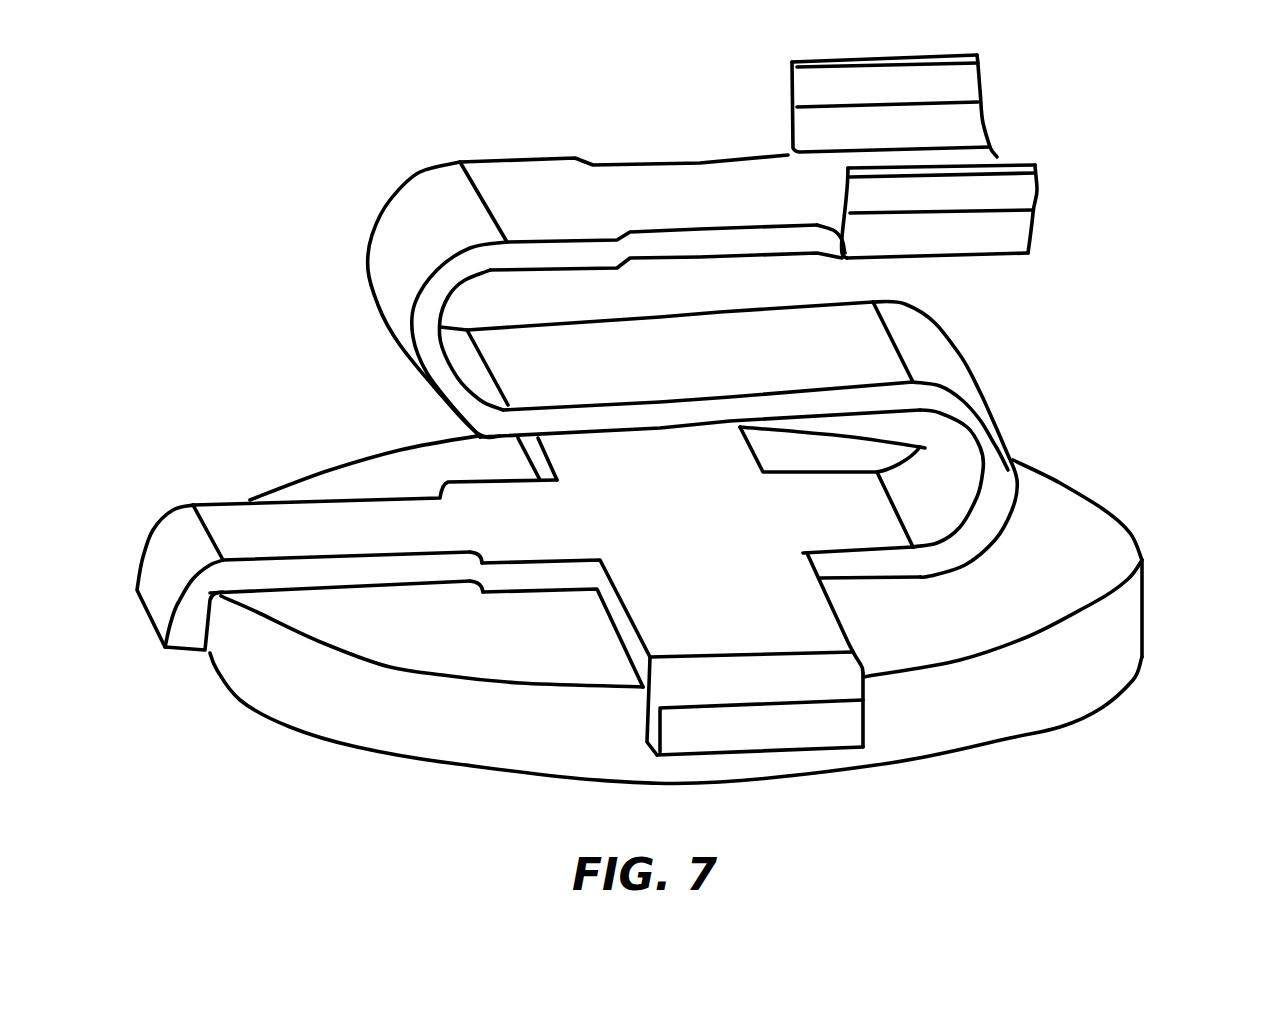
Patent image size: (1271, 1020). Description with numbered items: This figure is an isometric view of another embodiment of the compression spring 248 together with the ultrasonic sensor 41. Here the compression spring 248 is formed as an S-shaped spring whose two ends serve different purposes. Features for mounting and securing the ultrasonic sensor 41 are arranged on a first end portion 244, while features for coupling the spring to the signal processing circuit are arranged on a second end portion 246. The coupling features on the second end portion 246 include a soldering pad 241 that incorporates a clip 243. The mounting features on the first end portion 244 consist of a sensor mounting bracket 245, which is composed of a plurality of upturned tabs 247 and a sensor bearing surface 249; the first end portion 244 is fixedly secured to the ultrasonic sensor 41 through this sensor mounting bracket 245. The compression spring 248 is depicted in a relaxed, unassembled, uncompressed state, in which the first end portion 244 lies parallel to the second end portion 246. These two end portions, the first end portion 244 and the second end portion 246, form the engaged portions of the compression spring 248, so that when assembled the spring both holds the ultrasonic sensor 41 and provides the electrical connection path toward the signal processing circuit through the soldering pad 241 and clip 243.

The ultrasonic sensor 41 is at (1143, 591).
The soldering pad 241 is at (685, 187).
The clip 243 is at (815, 93).
The first end portion 244 is at (337, 498).
The sensor mounting bracket 245 is at (470, 563).
The second end portion 246 is at (995, 155).
The upturned tabs 247 is at (157, 580).
The compression spring 248 is at (372, 213).
The sensor bearing surface 249 is at (587, 573).